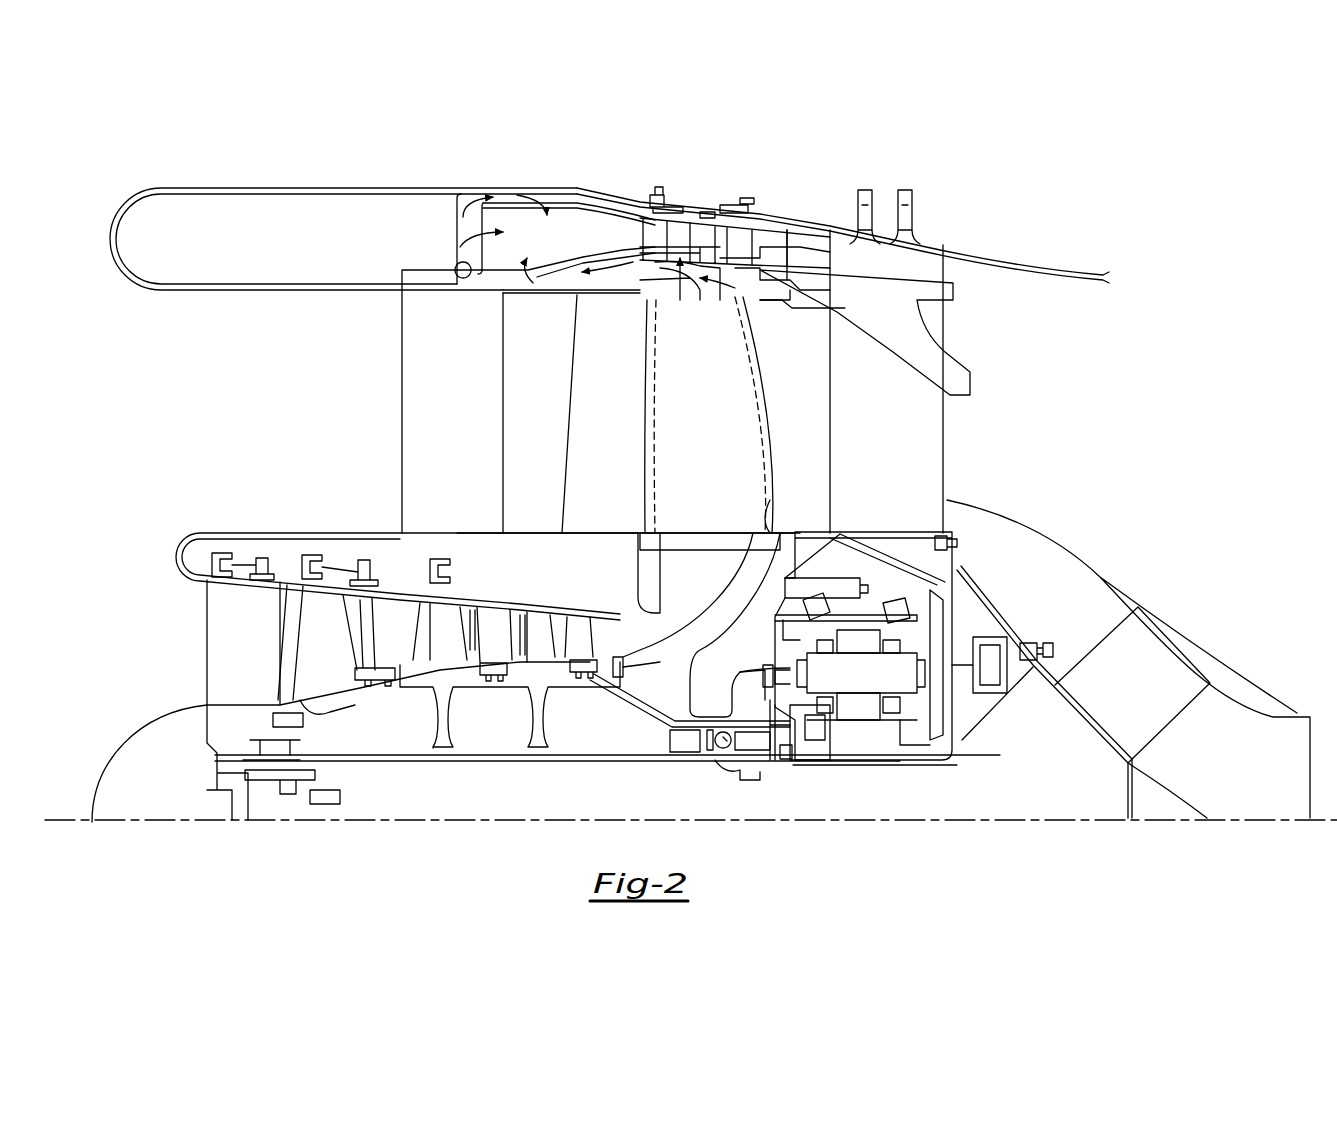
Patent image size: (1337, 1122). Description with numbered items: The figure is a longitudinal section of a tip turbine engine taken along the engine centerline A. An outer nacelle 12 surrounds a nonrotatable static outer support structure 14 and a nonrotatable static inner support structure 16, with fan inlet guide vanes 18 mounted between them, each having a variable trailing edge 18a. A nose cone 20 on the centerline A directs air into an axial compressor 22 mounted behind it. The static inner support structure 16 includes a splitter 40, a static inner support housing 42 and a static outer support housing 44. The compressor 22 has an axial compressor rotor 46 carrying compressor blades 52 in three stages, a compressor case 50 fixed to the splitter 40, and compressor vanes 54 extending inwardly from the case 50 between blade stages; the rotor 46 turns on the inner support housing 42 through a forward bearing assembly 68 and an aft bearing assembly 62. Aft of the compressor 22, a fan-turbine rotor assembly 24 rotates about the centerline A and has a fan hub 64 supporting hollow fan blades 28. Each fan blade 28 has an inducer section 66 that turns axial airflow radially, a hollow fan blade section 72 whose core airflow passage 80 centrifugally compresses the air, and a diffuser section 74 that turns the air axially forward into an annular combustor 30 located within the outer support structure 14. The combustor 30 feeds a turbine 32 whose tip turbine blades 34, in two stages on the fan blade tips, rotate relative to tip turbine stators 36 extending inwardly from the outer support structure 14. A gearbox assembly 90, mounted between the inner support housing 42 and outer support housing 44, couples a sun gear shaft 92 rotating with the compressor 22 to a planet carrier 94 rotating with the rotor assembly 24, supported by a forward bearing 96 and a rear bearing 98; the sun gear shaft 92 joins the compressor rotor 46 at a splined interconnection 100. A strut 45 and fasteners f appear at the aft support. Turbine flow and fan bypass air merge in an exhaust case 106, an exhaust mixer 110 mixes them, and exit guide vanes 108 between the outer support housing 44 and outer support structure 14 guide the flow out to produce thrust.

The outer nacelle 12 is at (481, 185).
The nonrotatable static outer support structure 14 is at (567, 222).
The nonrotatable static inner support structure 16 is at (191, 522).
The fan inlet guide vanes 18 is at (476, 423).
The variable trailing edge 18a is at (555, 423).
The nose cone 20 is at (131, 725).
The axial compressor 22 is at (186, 648).
The fan-turbine rotor assembly 24 is at (786, 492).
The hollow fan blades 28 is at (641, 500).
The annular combustor 30 is at (560, 200).
The turbine 32 is at (796, 246).
The tip turbine blades 34 is at (688, 232).
The tip turbine stators 36 is at (640, 215).
The splitter 40 is at (234, 540).
The static inner support housing 42 is at (490, 760).
The static outer support housing 44 is at (911, 532).
The strut 45 is at (1002, 612).
The axial compressor rotor 46 is at (645, 714).
The compressor case 50 is at (381, 590).
The compressor blades 52 is at (368, 690).
The compressor vanes 54 is at (473, 640).
The aft bearing assembly 62 is at (722, 747).
The fan hub 64 is at (690, 675).
The inducer section 66 is at (651, 552).
The forward bearing assembly 68 is at (255, 783).
The hollow fan blade section 72 is at (770, 505).
The diffuser section 74 is at (740, 292).
The core airflow passage 80 is at (656, 366).
The gearbox assembly 90 is at (868, 775).
The sun gear shaft 92 is at (817, 737).
The planet carrier 94 is at (782, 640).
The forward bearing 96 is at (816, 603).
The rear bearing 98 is at (896, 603).
The splined interconnection 100 is at (777, 745).
The exhaust case 106 is at (922, 242).
The exit guide vanes 108 is at (933, 415).
The exhaust mixer 110 is at (906, 281).
The engine centerline A is at (150, 817).
The fastener f is at (980, 540).